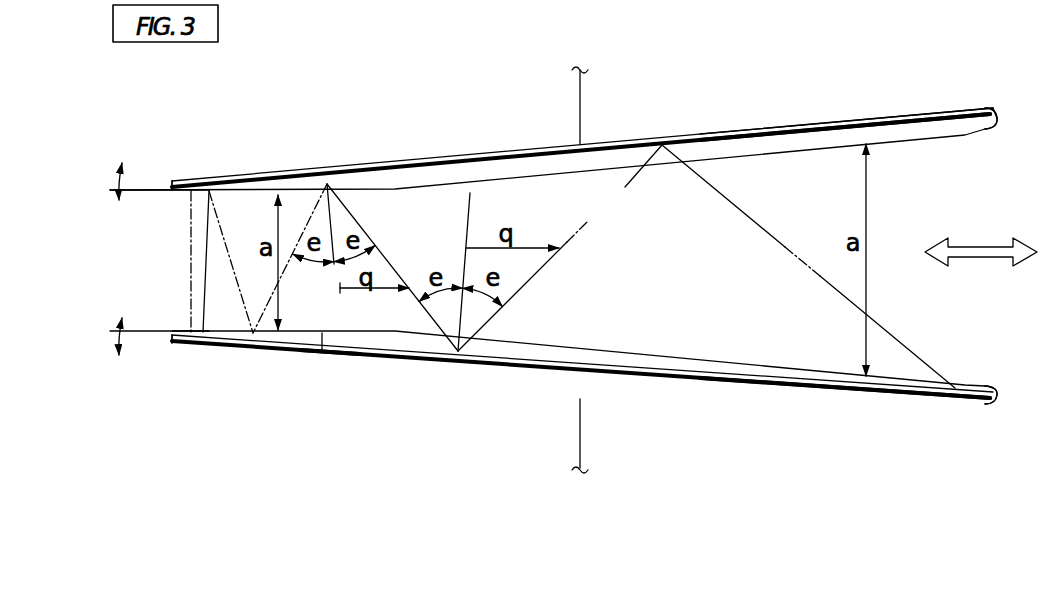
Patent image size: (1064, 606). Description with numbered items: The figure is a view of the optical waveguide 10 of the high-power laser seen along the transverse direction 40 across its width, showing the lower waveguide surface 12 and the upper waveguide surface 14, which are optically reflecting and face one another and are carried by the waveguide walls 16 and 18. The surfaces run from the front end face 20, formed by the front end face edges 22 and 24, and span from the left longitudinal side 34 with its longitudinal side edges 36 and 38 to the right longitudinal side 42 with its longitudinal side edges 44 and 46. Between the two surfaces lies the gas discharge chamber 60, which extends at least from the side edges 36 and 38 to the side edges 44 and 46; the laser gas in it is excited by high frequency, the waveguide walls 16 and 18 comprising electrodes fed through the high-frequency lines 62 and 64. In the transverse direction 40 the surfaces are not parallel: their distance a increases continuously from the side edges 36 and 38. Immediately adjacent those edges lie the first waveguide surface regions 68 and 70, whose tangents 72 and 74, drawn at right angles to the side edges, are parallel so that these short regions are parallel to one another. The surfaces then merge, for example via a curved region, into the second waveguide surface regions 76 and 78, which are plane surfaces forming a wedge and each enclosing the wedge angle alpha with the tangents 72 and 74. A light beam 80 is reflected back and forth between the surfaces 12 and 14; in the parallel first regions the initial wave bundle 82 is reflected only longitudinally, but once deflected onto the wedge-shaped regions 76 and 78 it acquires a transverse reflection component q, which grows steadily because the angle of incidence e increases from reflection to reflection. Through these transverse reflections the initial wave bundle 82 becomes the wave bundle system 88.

The optical waveguide 10 is at (385, 148).
The lower waveguide surface 12 is at (950, 395).
The upper waveguide surface 14 is at (950, 123).
The waveguide wall 16 is at (913, 393).
The waveguide wall 18 is at (932, 110).
The front end face 20 is at (828, 129).
The front end face edge 22 is at (850, 392).
The front end face edge 24 is at (787, 127).
The left longitudinal side 34 is at (170, 180).
The longitudinal side edge 36 is at (168, 345).
The longitudinal side edge 38 is at (150, 188).
The transverse direction 40 is at (997, 240).
The right longitudinal side 42 is at (1048, 46).
The longitudinal side edge 44 is at (997, 402).
The longitudinal side edge 46 is at (997, 111).
The gas discharge chamber 60 is at (738, 185).
The high-frequency line 62 is at (582, 418).
The high-frequency line 64 is at (580, 100).
The first waveguide surface region 68 is at (170, 327).
The first waveguide surface region 70 is at (167, 195).
The tangent 72 is at (323, 353).
The tangent 74 is at (317, 182).
The second waveguide surface region 76 is at (527, 339).
The second waveguide surface region 78 is at (540, 177).
The light beam 80 is at (585, 225).
The initial wave bundle 82 is at (190, 259).
The wave bundle system 88 is at (802, 281).